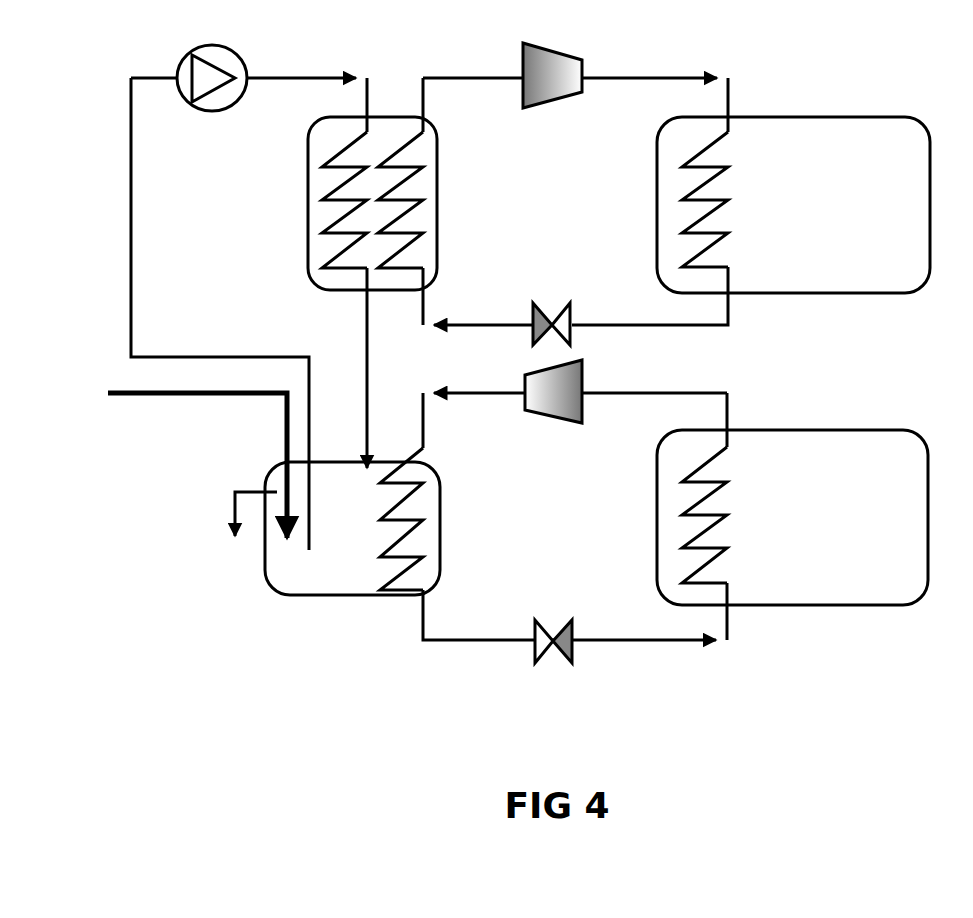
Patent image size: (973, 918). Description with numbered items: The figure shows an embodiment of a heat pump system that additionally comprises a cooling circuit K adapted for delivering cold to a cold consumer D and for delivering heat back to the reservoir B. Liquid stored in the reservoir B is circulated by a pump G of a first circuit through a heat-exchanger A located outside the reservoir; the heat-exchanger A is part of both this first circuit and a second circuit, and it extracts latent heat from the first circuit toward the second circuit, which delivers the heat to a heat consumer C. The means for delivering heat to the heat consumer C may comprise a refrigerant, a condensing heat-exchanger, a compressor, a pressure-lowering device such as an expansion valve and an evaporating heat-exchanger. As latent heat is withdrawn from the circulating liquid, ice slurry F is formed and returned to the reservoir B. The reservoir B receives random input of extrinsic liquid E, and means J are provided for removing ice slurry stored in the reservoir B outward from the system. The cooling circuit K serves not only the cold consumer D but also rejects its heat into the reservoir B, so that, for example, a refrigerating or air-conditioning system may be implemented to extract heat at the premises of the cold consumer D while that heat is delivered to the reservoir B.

The heat-exchanger A is at (353, 203).
The reservoir B is at (352, 561).
The heat consumer C is at (793, 205).
The cold consumer D is at (792, 517).
The extrinsic liquid E is at (181, 460).
The ice slurry F is at (355, 368).
The pump G is at (199, 67).
The means for removing ice slurry J is at (253, 541).
The cooling circuit K is at (474, 420).